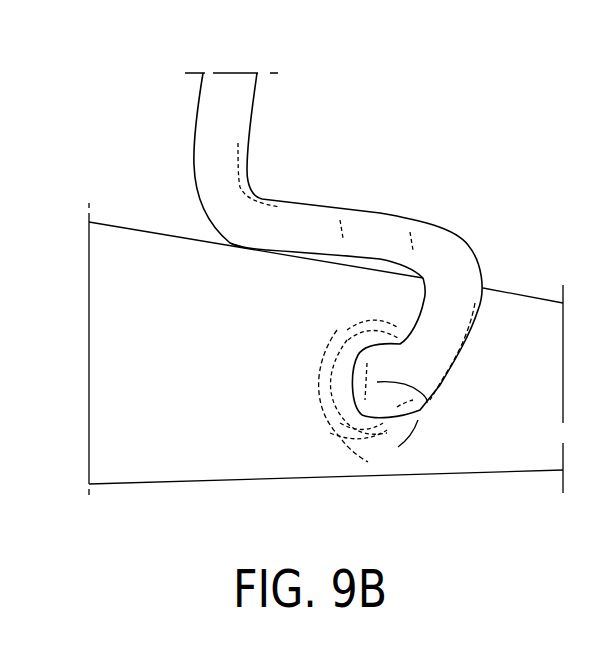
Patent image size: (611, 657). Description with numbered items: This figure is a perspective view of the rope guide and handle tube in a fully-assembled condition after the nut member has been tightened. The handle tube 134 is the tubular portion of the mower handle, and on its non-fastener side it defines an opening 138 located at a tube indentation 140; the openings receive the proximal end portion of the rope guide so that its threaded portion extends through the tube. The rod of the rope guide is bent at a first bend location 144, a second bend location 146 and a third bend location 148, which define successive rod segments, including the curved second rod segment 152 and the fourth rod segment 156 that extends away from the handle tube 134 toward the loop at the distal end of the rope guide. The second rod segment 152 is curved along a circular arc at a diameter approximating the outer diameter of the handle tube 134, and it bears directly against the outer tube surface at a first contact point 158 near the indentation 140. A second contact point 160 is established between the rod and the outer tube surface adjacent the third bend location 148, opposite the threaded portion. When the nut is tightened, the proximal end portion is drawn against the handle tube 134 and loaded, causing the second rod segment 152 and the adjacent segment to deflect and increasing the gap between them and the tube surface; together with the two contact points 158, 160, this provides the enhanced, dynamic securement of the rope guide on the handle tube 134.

The tubular portion 134 is at (162, 468).
The opening 138 is at (357, 370).
The tube indentation 140 is at (333, 423).
The first bend location 144 is at (427, 402).
The second bend location 146 is at (440, 242).
The third bend location 148 is at (240, 193).
The second rod segment 152 is at (453, 330).
The fourth rod segment 156 is at (247, 92).
The first contact point 158 is at (400, 337).
The second contact point 160 is at (249, 252).